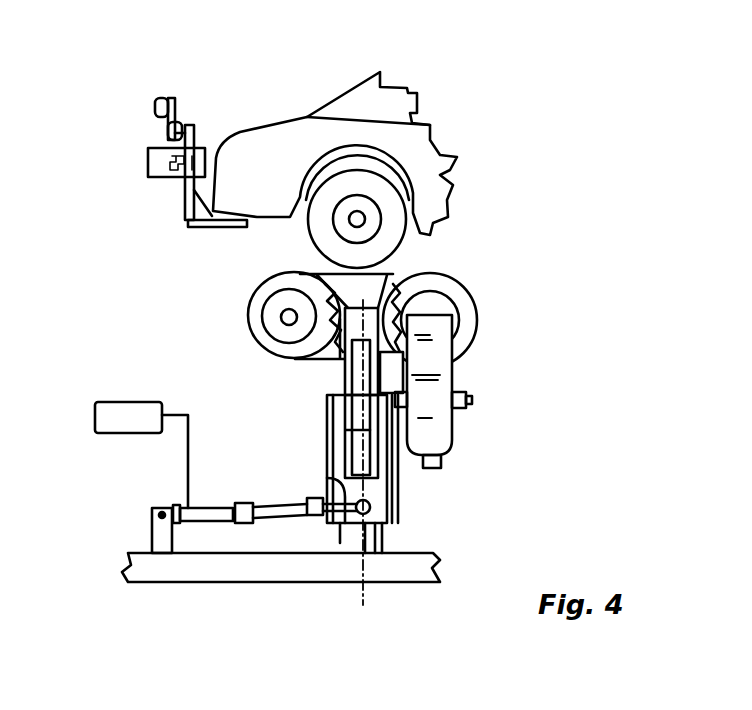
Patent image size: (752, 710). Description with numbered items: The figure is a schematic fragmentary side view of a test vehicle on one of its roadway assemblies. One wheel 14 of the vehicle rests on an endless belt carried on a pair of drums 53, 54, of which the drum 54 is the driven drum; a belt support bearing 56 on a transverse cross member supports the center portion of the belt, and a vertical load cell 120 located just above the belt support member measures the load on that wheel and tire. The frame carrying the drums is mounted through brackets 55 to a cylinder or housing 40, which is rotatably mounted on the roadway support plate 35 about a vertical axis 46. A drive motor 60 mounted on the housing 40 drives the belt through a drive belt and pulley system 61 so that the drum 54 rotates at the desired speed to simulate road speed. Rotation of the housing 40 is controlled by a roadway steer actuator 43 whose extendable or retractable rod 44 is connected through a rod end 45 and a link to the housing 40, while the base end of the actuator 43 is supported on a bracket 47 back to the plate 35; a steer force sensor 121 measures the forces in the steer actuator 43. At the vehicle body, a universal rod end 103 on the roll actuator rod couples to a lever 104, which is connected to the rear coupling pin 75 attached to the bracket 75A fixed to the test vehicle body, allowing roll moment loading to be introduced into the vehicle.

The wheel 14 is at (375, 188).
The rear coupling pin 75 is at (186, 122).
The bracket 75A is at (188, 228).
The universal rod end 103 is at (165, 92).
The lever 104 is at (168, 120).
The drum 53 is at (262, 290).
The driven drum 54 is at (455, 285).
The belt support bearing 56 is at (390, 273).
The load cell 120 is at (328, 326).
The bracket 55 is at (345, 376).
The drive belt and pulley system 61 is at (443, 372).
The drive motor 60 is at (453, 453).
The housing 40 is at (323, 440).
The vertical axis 46 is at (367, 455).
The rod end 45 is at (340, 538).
The steer force sensor 121 is at (125, 400).
The bracket 47 is at (153, 506).
The roadway steer actuator 43 is at (243, 503).
The rod 44 is at (330, 478).
The roadway support plate 35 is at (420, 553).